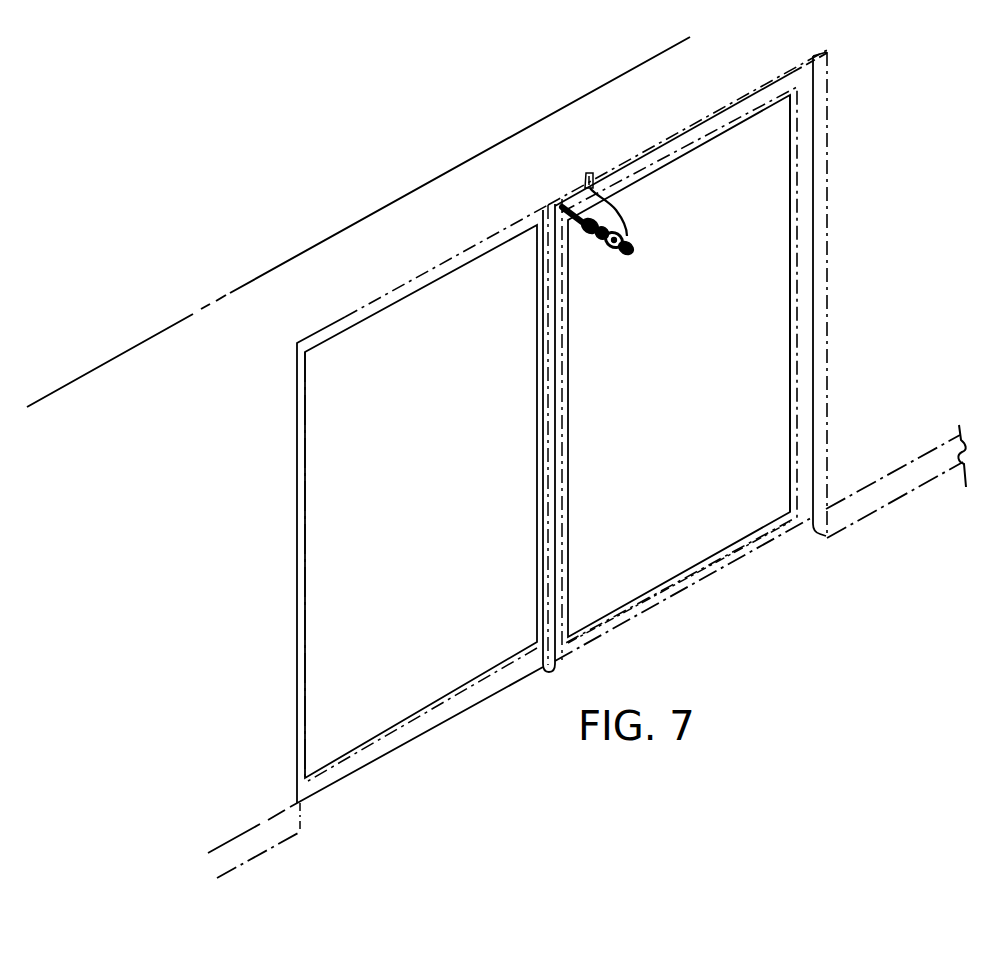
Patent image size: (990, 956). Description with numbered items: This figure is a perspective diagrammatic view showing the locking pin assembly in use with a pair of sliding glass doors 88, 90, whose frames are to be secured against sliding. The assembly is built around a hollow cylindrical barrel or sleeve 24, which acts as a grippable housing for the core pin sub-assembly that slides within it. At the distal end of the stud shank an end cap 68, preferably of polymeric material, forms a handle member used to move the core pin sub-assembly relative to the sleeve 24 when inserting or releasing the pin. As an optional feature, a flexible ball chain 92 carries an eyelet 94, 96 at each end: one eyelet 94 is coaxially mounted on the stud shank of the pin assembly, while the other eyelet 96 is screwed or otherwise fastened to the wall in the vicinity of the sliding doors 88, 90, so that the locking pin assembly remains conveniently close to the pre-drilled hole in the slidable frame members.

The hollow cylindrical barrel or sleeve 24 is at (596, 238).
The end cap 68 is at (640, 253).
The sliding glass door 88 is at (690, 427).
The sliding glass door 90 is at (442, 488).
The flexible ball chain 92 is at (622, 215).
The eyelet 94 is at (633, 241).
The eyelet 96 is at (589, 173).